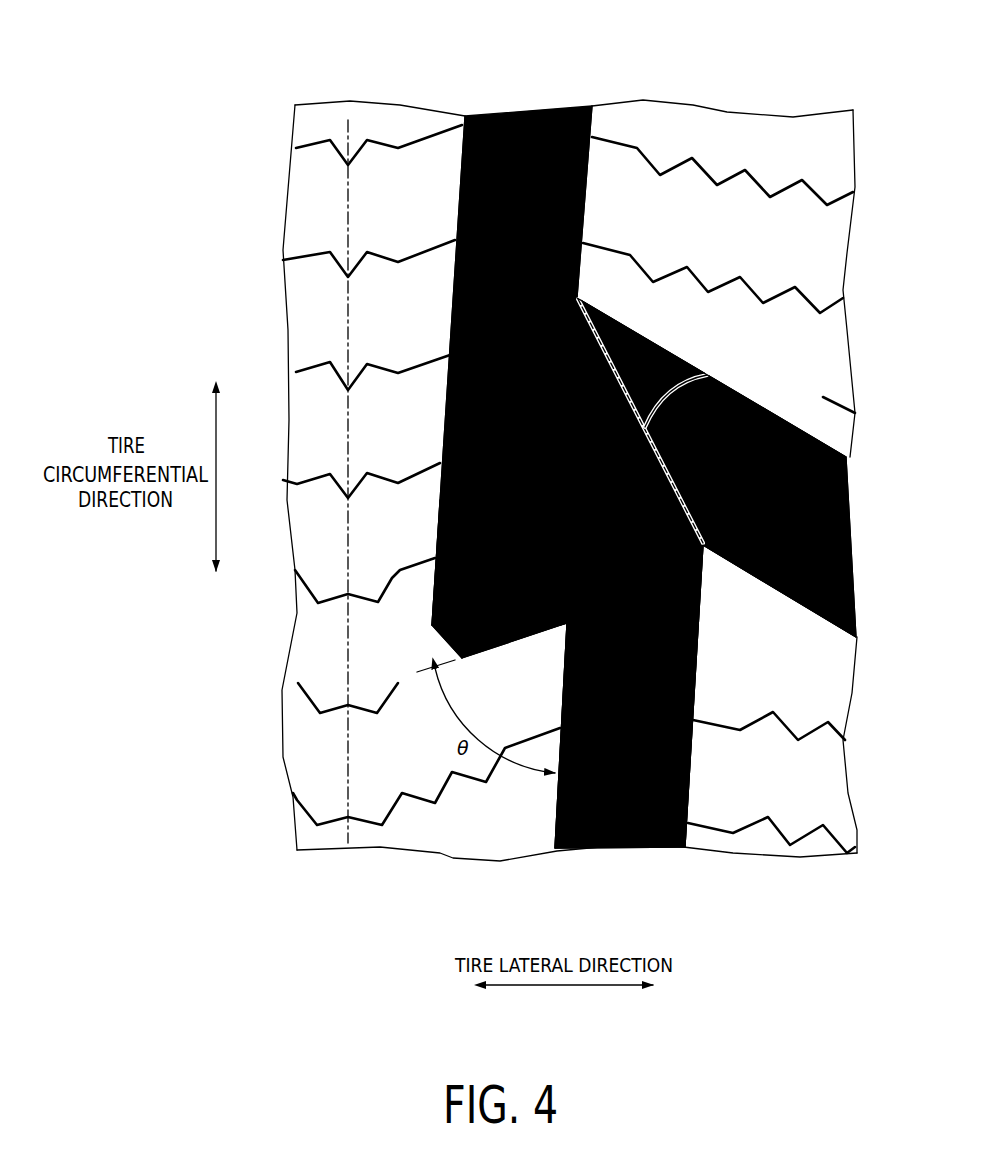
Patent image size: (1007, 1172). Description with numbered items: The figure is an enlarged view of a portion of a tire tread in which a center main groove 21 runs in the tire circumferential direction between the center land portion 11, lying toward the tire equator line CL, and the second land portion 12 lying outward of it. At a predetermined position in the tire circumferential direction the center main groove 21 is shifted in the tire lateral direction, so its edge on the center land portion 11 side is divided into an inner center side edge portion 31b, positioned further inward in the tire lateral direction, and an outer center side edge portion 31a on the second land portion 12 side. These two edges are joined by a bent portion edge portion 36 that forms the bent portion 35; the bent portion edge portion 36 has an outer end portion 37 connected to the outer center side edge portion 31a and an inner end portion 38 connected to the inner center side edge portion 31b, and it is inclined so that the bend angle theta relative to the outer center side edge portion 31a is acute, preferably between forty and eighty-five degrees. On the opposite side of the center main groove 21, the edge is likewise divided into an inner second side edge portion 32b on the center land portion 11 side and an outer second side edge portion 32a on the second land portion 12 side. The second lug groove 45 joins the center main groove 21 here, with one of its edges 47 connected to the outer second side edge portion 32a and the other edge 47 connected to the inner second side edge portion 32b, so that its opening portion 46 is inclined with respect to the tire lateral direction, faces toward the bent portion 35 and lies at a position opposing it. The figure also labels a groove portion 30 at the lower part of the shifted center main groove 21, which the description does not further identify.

The tire equator line CL is at (348, 122).
The center land portion 11 is at (392, 177).
The second land portion 12 is at (733, 210).
The center main groove 21 is at (520, 135).
The lug groove 30 is at (555, 800).
The outer center side edge portion 31a is at (555, 827).
The inner center side edge portion 31b is at (452, 305).
The outer second side edge portion 32a is at (692, 762).
The inner second side edge portion 32b is at (588, 207).
The bent portion 35 is at (422, 591).
The bent portion edge portion 36 is at (507, 647).
The outer end portion 37 is at (565, 630).
The inner end portion 38 is at (458, 658).
The second lug groove 45 is at (818, 520).
The opening portion 46 is at (707, 375).
The edge 47 is at (800, 436).